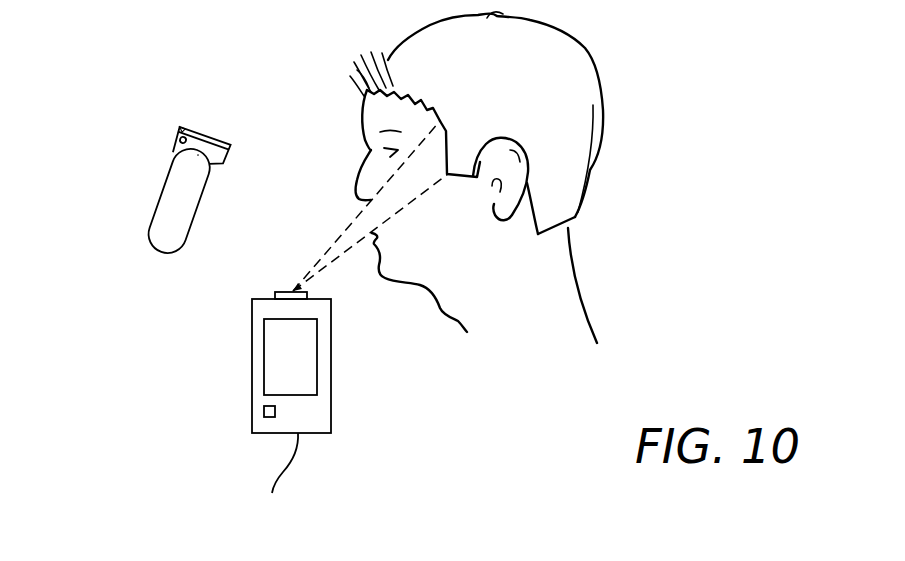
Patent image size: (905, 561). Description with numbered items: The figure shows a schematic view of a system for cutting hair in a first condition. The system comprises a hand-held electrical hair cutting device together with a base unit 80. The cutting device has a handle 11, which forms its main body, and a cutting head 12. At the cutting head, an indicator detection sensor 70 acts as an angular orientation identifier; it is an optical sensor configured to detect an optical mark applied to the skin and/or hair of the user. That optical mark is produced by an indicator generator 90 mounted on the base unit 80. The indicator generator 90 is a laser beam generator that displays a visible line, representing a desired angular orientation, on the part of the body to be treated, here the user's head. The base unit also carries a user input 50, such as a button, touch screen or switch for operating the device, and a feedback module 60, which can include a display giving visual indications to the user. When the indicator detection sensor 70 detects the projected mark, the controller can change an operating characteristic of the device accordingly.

The handle 11 is at (147, 227).
The cutting head 12 is at (177, 138).
The indicator detection sensor 70 is at (180, 127).
The indicator generator 90 is at (289, 290).
The feedback module 60 is at (264, 348).
The user input 50 is at (264, 410).
The base unit 80 is at (275, 487).